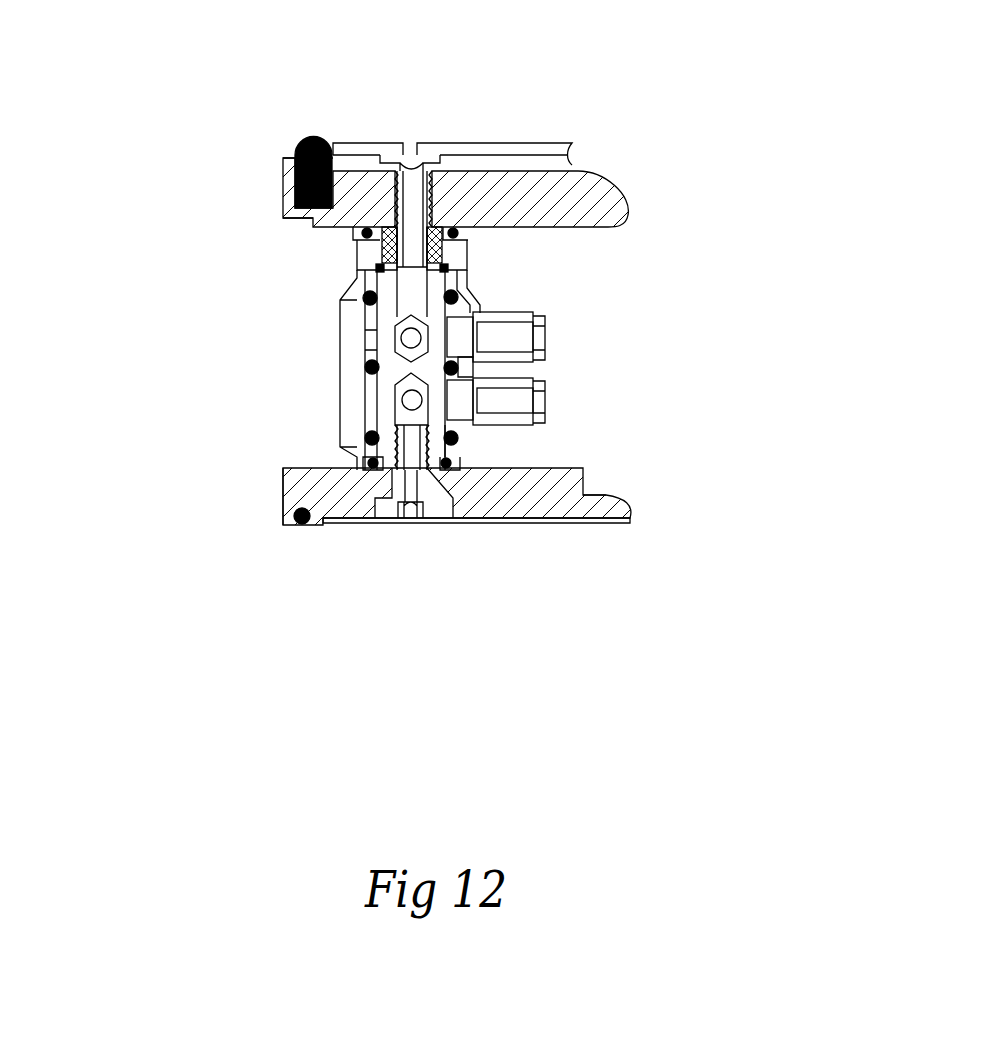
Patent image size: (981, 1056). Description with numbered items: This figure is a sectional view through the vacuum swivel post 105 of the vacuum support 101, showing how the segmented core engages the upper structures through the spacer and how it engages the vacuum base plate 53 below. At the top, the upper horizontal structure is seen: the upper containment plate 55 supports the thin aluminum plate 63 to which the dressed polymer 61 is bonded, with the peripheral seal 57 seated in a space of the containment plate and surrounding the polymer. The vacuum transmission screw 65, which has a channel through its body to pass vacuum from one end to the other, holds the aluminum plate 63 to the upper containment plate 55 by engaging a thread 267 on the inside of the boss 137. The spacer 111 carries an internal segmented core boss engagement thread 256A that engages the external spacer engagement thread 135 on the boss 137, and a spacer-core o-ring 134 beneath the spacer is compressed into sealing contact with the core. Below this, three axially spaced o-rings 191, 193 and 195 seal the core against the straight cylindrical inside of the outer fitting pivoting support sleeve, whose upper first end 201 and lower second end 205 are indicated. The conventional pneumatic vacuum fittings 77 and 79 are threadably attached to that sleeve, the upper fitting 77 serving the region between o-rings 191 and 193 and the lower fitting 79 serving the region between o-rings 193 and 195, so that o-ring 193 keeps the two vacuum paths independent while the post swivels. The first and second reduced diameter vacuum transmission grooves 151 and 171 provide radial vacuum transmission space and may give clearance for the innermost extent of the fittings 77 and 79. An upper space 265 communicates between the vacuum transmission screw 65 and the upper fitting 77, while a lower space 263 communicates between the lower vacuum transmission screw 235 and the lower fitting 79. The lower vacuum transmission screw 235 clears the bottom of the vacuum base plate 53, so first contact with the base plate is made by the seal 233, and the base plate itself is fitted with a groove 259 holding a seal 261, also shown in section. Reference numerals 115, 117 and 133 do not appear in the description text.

The vacuum base plate 53 is at (535, 530).
The upper containment plate 55 is at (512, 180).
The peripheral seal 57 is at (300, 150).
The dressed polymer 61 is at (330, 145).
The thin aluminum plate 63 is at (393, 143).
The vacuum transmission screw 65 is at (417, 143).
The upper pneumatic vacuum fitting 77 is at (548, 317).
The lower pneumatic vacuum fitting 79 is at (548, 392).
The vacuum support 101 is at (630, 147).
The vacuum swivel post 105 is at (683, 380).
The upper spacer 111 is at (348, 236).
The left housing body 115 is at (345, 335).
The o-rings 117 is at (345, 300).
The top plate 133 is at (500, 152).
The spacer-core o-ring 134 is at (456, 272).
The external spacer engagement thread 135 is at (460, 232).
The boss 137 is at (450, 143).
The first reduced diameter vacuum transmission groove 151 is at (400, 350).
The second reduced diameter vacuum transmission groove 171 is at (345, 397).
The o-ring 191 is at (458, 296).
The o-ring 193 is at (460, 369).
The o-ring 195 is at (462, 450).
The first end 201 is at (357, 240).
The second end 205 is at (562, 492).
The seal 233 is at (470, 525).
The lower vacuum transmission screw 235 is at (385, 525).
The internal segmented core boss engagement thread 256A is at (440, 268).
The groove 259 is at (283, 497).
The seal 261 is at (300, 522).
The lower space 263 is at (355, 417).
The upper space 265 is at (365, 345).
The thread 267 is at (450, 258).